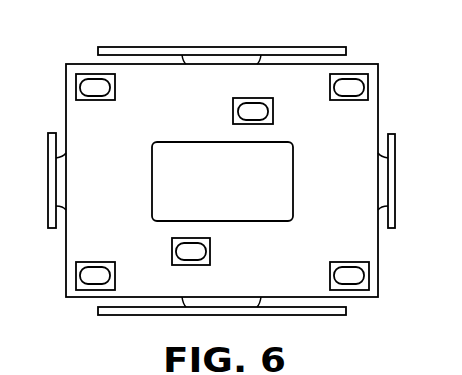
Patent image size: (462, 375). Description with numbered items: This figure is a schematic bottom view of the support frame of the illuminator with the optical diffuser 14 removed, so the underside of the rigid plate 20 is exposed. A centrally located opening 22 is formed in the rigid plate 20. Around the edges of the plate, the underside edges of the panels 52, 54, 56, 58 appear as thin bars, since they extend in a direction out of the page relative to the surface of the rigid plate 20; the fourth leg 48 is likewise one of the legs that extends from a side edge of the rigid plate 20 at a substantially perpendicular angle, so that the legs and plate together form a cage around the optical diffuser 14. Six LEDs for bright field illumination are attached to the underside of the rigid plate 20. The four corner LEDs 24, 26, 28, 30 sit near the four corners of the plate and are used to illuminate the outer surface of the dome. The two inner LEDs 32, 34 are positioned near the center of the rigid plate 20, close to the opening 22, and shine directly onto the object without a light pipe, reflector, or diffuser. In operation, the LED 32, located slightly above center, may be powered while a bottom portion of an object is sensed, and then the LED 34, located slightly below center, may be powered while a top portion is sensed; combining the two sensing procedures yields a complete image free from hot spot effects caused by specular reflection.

The optical diffuser 14 is at (216, 182).
The rigid plate 20 is at (66, 256).
The opening 22 is at (152, 182).
The corner LED 24 is at (115, 87).
The corner LED 26 is at (353, 100).
The corner LED 28 is at (353, 262).
The corner LED 30 is at (88, 262).
The inner LED 32 is at (233, 113).
The inner LED 34 is at (210, 249).
The fourth leg 48 is at (0, 120).
The panel 52 is at (150, 47).
The panel 54 is at (133, 318).
The panel 56 is at (48, 190).
The panel 58 is at (396, 219).